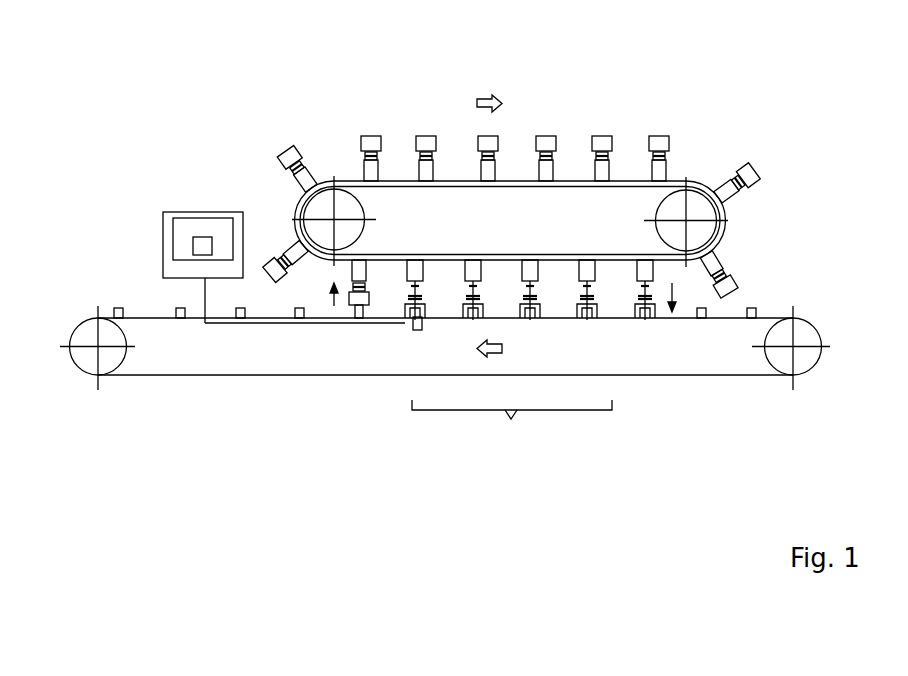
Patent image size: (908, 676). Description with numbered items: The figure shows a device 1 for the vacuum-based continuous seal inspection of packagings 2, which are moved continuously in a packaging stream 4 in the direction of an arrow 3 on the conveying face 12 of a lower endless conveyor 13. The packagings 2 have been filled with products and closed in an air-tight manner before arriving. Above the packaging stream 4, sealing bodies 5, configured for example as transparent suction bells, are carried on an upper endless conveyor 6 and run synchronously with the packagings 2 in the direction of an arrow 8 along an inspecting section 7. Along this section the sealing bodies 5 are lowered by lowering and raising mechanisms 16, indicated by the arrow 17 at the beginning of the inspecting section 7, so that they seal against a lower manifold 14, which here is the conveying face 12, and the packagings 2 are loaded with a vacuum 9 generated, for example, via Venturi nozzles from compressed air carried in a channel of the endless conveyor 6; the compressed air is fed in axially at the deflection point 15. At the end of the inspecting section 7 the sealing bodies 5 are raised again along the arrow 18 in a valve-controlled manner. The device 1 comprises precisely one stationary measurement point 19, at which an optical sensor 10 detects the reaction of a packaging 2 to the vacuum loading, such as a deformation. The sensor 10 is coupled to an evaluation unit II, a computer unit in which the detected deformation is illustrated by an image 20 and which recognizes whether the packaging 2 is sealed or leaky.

The device 1 is at (158, 93).
The packagings 2 is at (118, 307).
The arrow 3 is at (479, 352).
The packaging stream 4 is at (758, 295).
The sealing bodies 5 is at (724, 282).
The endless conveyor 6 is at (696, 166).
The inspecting section 7 is at (512, 424).
The arrow 8 is at (478, 96).
The vacuum 9 is at (482, 306).
The sensor 10 is at (413, 331).
The conveying face 12 is at (553, 316).
The endless conveyor 13 is at (184, 381).
The lower manifold 14 is at (604, 314).
The deflection point 15 is at (322, 213).
The lowering and raising mechanisms 16 is at (645, 272).
The arrow 17 is at (669, 318).
The arrow 18 is at (330, 297).
The measurement point 19 is at (402, 327).
The image 20 is at (201, 237).
The evaluation unit II is at (177, 218).